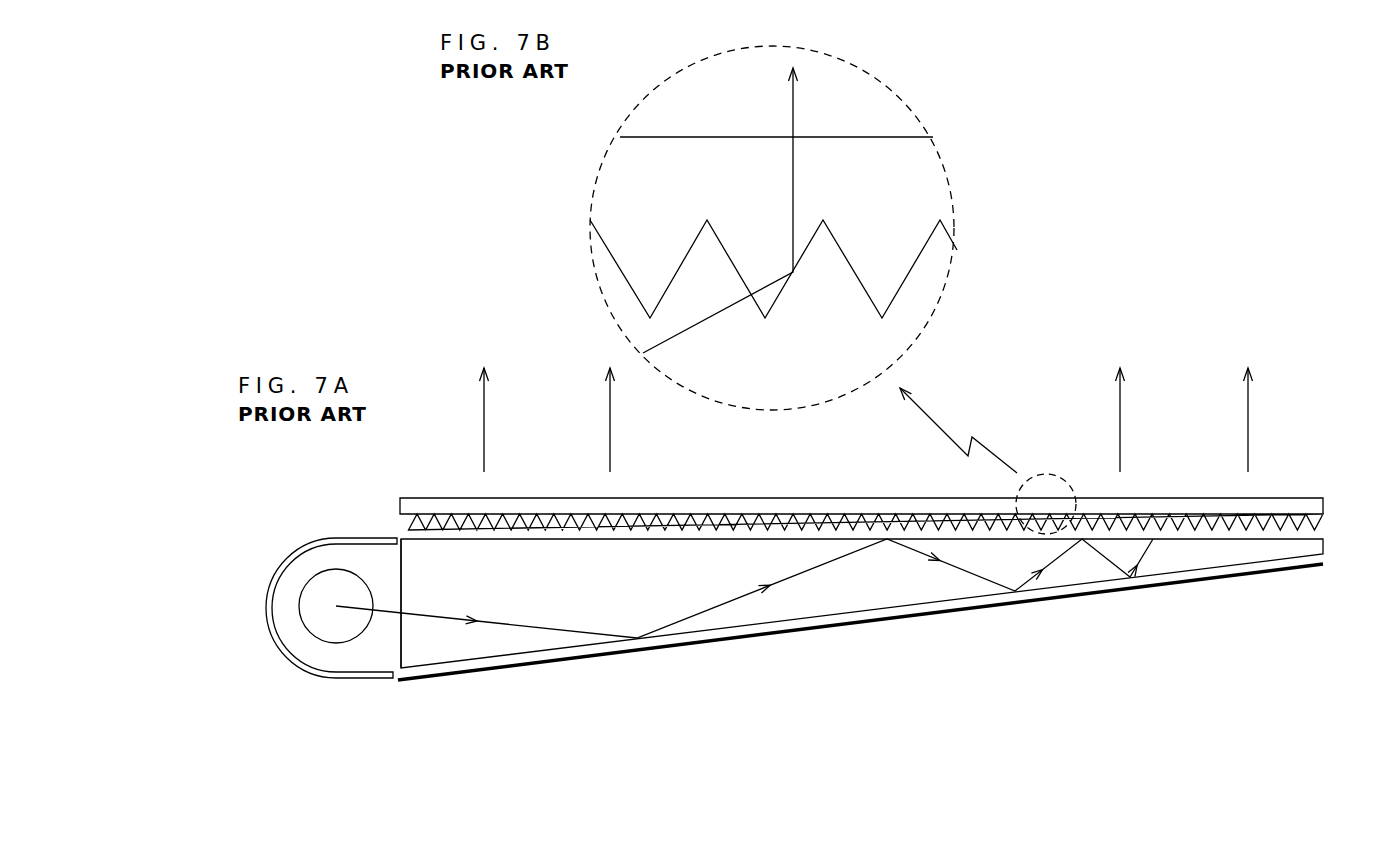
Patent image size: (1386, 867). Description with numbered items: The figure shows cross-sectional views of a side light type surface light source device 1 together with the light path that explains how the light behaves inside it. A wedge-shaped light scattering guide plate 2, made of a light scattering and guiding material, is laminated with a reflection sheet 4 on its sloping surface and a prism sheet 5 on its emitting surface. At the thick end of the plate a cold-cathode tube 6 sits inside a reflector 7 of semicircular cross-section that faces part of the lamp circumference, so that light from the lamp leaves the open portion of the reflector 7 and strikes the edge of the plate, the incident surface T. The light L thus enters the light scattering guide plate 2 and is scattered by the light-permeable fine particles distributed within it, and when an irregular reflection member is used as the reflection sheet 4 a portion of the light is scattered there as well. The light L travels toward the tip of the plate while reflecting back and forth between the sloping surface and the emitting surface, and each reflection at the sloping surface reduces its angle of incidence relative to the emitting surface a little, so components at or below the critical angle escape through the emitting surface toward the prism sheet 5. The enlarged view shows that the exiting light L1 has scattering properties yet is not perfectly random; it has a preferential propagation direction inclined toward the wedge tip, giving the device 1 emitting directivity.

In FIG. 7A, the side light type surface light source device 1 is at (1088, 240).
In FIG. 7A, the light scattering guide plate 2 is at (827, 598).
In FIG. 7A, the reflection sheet 4 is at (987, 605).
In FIG. 7B, the prism sheet 5 is at (908, 177).
In FIG. 7A, the prism sheet 5 is at (735, 498).
In FIG. 7A, the cold-cathode tube 6 is at (343, 635).
In FIG. 7A, the reflector 7 is at (282, 652).
In FIG. 7A, the light L is at (537, 627).
In FIG. 7B, the exiting light L1 is at (733, 303).
In FIG. 7A, the exiting light L1 is at (1248, 440).
In FIG. 7A, the incident surface T is at (401, 600).